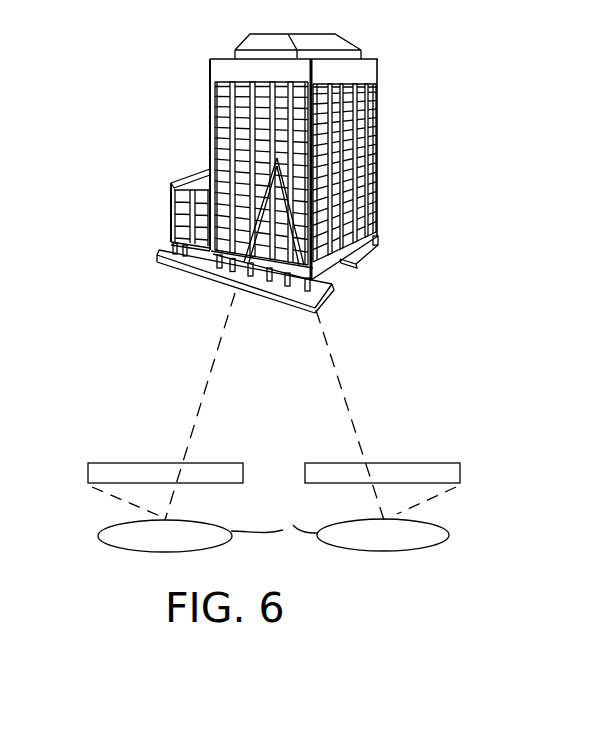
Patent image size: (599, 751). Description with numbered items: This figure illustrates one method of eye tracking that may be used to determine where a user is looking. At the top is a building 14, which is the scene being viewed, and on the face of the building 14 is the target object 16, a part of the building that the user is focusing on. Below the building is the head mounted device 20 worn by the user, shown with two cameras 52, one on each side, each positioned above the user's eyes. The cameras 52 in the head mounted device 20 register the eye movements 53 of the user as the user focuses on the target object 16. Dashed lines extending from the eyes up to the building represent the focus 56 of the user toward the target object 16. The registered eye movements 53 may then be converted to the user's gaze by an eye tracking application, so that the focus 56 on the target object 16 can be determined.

The building 14 is at (136, 193).
The target object 16 is at (278, 162).
The head mounted device 20 is at (58, 476).
The cameras 52 is at (89, 484).
The eye movements 53 is at (283, 530).
The focus 56 is at (332, 347).